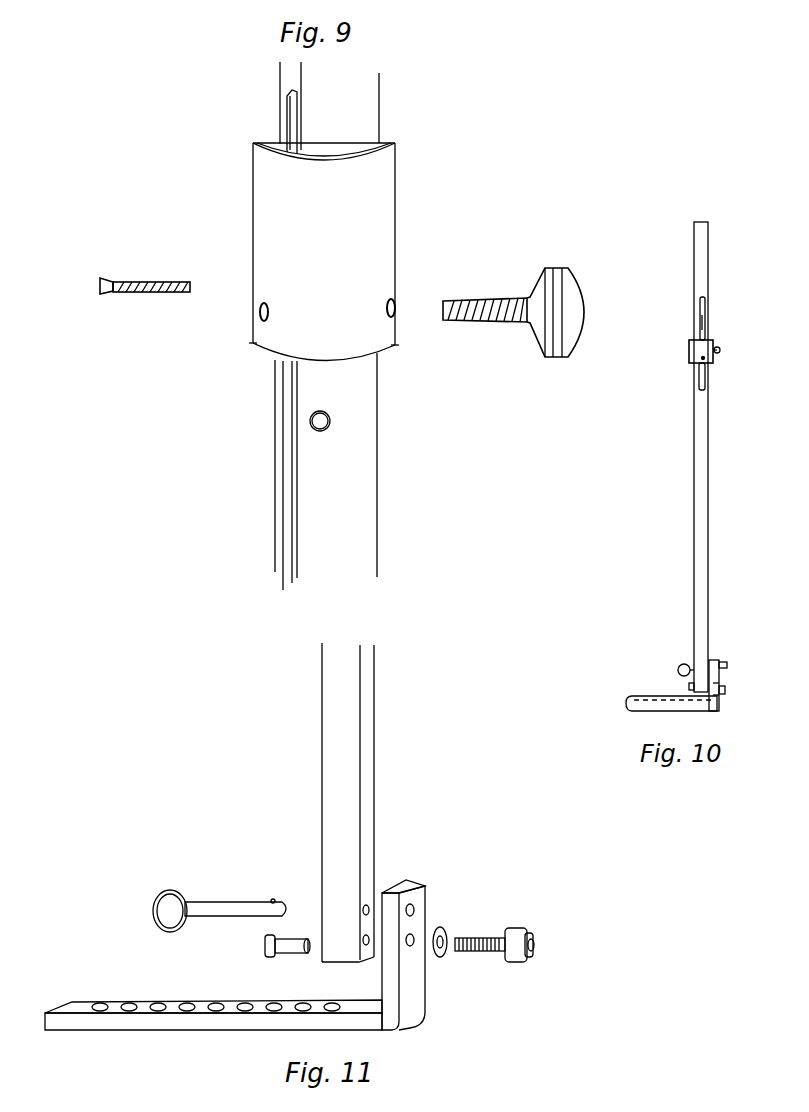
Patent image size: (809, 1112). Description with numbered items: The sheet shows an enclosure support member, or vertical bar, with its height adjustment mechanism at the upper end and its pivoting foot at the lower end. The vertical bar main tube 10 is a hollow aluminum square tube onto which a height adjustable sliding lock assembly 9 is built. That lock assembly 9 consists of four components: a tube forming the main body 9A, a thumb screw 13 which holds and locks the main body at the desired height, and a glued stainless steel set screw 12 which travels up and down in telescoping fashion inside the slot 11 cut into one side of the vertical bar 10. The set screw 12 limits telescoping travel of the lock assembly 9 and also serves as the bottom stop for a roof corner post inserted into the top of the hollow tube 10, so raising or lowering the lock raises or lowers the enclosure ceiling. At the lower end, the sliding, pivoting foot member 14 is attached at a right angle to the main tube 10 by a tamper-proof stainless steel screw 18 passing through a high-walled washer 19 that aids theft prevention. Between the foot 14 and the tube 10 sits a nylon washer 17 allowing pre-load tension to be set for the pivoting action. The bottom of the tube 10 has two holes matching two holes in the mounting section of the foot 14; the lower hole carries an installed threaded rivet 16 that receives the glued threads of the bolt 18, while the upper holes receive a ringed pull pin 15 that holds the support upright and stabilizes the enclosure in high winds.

In FIG. 10, the height adjustable sliding lock assembly 9 is at (690, 355).
In FIG. 9, the main body tube 9A is at (372, 196).
In FIG. 10, the vertical bar main tube 10 is at (706, 237).
In FIG. 11, the vertical bar main tube 10 is at (345, 714).
In FIG. 9, the slot 11 is at (291, 419).
In FIG. 10, the slot 11 is at (707, 312).
In FIG. 9, the glued set screw 12 is at (140, 285).
In FIG. 10, the glued set screw 12 is at (708, 358).
In FIG. 9, the thumb screw 13 is at (483, 272).
In FIG. 10, the thumb screw 13 is at (719, 349).
In FIG. 10, the pivoting foot member 14 is at (633, 705).
In FIG. 11, the pivoting foot member 14 is at (75, 1022).
In FIG. 10, the ringed pull pin 15 is at (678, 669).
In FIG. 11, the ringed pull pin 15 is at (225, 910).
In FIG. 10, the threaded rivet 16 is at (688, 686).
In FIG. 11, the threaded rivet 16 is at (266, 948).
In FIG. 10, the nylon washer 17 is at (716, 693).
In FIG. 11, the nylon washer 17 is at (445, 930).
In FIG. 10, the tamper-proof screw 18 is at (727, 684).
In FIG. 11, the tamper-proof screw 18 is at (488, 936).
In FIG. 10, the high-walled washer 19 is at (727, 691).
In FIG. 11, the high-walled washer 19 is at (512, 966).